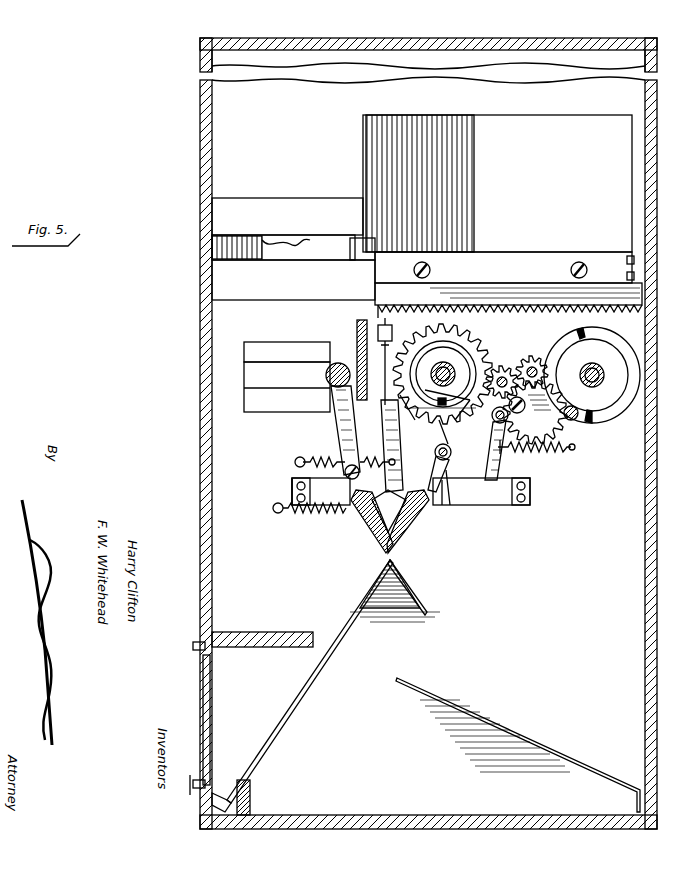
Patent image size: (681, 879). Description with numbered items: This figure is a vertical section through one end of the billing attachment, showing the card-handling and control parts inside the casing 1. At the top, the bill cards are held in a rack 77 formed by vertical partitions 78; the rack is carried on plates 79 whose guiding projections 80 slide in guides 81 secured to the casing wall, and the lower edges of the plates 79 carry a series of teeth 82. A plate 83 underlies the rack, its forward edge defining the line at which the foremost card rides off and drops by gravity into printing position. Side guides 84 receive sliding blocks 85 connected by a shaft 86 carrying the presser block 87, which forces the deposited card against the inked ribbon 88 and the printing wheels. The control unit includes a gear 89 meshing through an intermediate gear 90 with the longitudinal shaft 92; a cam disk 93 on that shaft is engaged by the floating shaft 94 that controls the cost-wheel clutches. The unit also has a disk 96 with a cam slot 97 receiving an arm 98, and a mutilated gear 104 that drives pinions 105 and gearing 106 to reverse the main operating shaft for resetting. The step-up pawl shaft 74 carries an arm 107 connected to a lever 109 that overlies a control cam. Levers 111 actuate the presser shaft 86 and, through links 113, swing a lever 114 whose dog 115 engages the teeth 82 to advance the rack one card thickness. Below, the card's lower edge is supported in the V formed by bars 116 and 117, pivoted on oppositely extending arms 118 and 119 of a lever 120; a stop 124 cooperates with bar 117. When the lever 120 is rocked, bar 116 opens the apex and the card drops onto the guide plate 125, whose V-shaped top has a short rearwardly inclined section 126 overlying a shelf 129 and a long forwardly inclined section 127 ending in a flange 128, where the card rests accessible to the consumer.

The casing 1 is at (200, 258).
The shaft of the step-up pawl 74 is at (462, 466).
The rack 77 is at (495, 117).
The vertical partitions 78 is at (377, 155).
The plates 79 is at (449, 318).
The guiding projections 80 is at (352, 248).
The guides 81 is at (293, 249).
The teeth 82 is at (508, 310).
The plate 83 is at (504, 267).
The guides 84 is at (287, 352).
The blocks 85 is at (287, 387).
The shaft 86 is at (340, 364).
The presser block 87 is at (357, 323).
The inked tape or ribbon 88 is at (355, 430).
The gear 89 is at (443, 368).
The intermediate gear 90 is at (548, 435).
The shaft 92 is at (592, 375).
The cam disk 93 is at (605, 338).
The floating shaft 94 is at (592, 420).
The disk 96 is at (438, 417).
The cam slot 97 is at (480, 350).
The arm 98 is at (487, 423).
The mutilated gear 104 is at (399, 361).
The pinions 105 is at (533, 362).
The gearing 106 is at (553, 368).
The arm 107 is at (445, 506).
The lever 109 is at (506, 463).
The levers 111 is at (402, 444).
The links 113 is at (432, 470).
The lever 114 is at (452, 452).
The dog 115 is at (510, 301).
The bar 116 is at (372, 535).
The bar 117 is at (407, 536).
The arm 118 is at (375, 492).
The arm 119 is at (389, 511).
The lever 120 is at (393, 463).
The stop 124 is at (498, 505).
The guide plate 125 is at (386, 563).
The rearwardly inclined section 126 is at (420, 591).
The forwardly inclined section 127 is at (342, 626).
The flange 128 is at (232, 780).
The shelf 129 is at (520, 712).